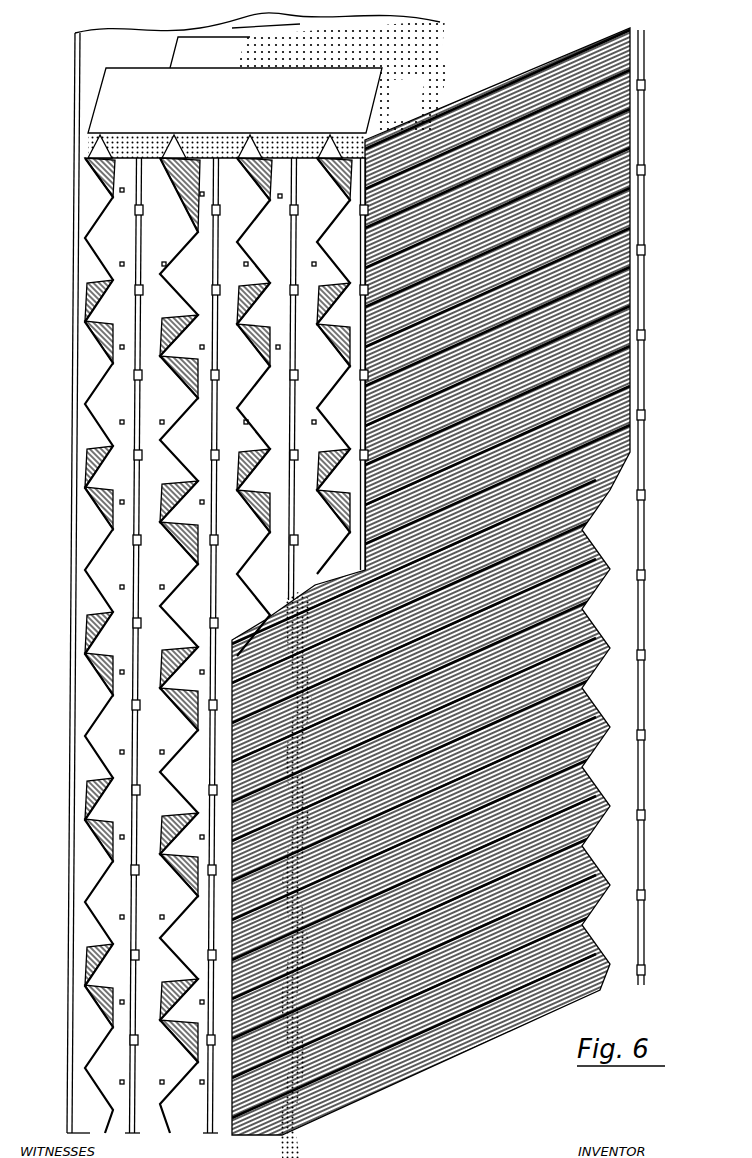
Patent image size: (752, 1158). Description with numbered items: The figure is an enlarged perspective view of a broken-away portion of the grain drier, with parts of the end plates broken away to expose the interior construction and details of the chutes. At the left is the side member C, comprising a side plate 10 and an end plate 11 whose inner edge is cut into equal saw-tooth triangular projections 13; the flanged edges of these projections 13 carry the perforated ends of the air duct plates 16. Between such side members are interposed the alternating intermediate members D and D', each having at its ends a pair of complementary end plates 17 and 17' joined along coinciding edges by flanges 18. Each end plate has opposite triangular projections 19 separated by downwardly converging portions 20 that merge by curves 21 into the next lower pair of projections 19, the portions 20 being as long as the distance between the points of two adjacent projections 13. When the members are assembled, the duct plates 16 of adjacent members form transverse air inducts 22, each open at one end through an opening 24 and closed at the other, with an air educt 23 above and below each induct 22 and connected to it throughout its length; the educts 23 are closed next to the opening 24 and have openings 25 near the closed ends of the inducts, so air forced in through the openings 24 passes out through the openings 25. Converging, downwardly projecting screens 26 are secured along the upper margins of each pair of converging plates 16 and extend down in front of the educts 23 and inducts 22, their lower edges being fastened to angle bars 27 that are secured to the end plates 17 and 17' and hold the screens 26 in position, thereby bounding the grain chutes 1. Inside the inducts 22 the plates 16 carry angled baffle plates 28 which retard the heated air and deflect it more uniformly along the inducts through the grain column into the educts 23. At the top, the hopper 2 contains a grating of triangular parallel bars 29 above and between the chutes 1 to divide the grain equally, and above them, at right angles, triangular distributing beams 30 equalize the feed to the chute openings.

The grain chute 1 is at (296, 875).
The hopper 2 is at (116, 46).
The side plate 10 is at (72, 268).
The end plate 11 is at (80, 432).
The triangular projection 13 is at (217, 645).
The air duct plate 16 is at (379, 590).
The end plate 17 is at (396, 592).
The end plate 17' is at (255, 635).
The flange 18 is at (232, 1068).
The triangular projection 19 is at (358, 636).
The downwardly converging portion 20 is at (660, 566).
The curve 21 is at (660, 654).
The air induct 22 is at (92, 180).
The air educt 23 is at (612, 445).
The induct opening 24 is at (90, 170).
The educt opening 25 is at (622, 168).
The screen 26 is at (626, 118).
The angle bar 27 is at (339, 772).
The baffle plate 28 is at (486, 751).
The triangular parallel bar 29 is at (90, 144).
The triangular distributing beam 30 is at (245, 30).
The side member C is at (70, 602).
The intermediate member D is at (224, 123).
The intermediate member D' is at (219, 123).